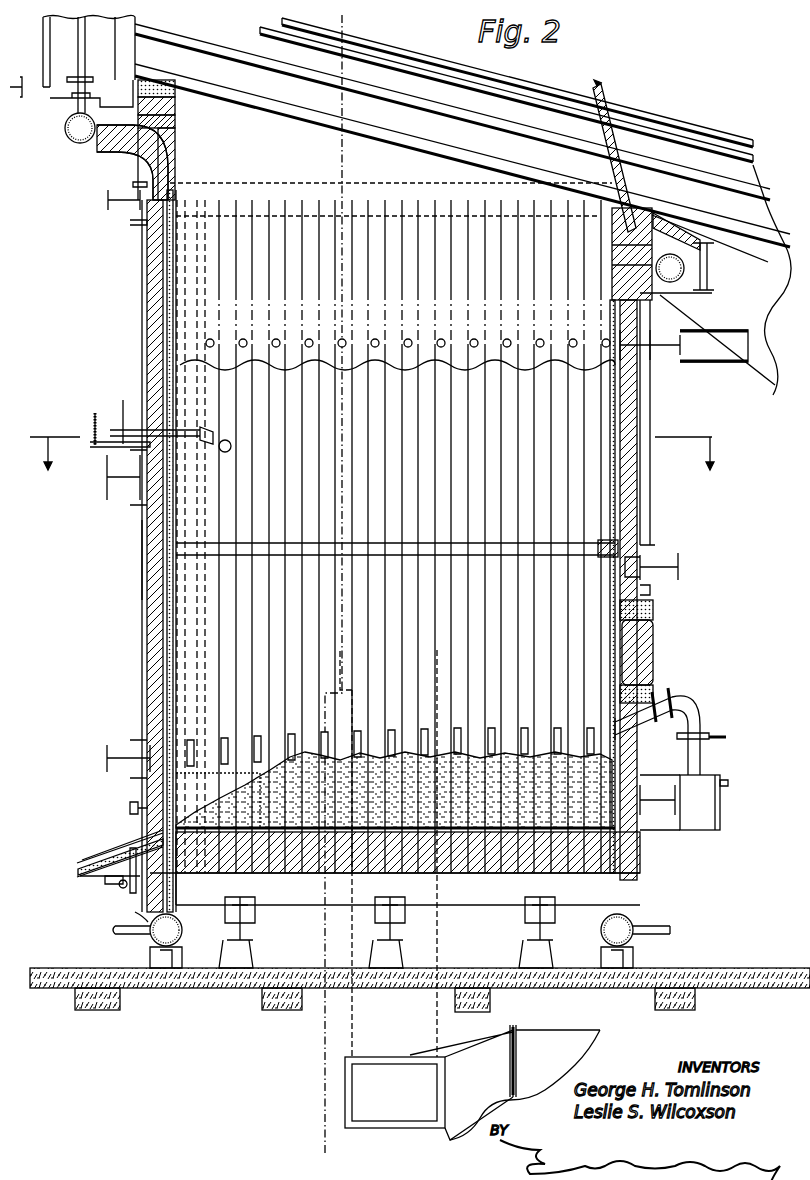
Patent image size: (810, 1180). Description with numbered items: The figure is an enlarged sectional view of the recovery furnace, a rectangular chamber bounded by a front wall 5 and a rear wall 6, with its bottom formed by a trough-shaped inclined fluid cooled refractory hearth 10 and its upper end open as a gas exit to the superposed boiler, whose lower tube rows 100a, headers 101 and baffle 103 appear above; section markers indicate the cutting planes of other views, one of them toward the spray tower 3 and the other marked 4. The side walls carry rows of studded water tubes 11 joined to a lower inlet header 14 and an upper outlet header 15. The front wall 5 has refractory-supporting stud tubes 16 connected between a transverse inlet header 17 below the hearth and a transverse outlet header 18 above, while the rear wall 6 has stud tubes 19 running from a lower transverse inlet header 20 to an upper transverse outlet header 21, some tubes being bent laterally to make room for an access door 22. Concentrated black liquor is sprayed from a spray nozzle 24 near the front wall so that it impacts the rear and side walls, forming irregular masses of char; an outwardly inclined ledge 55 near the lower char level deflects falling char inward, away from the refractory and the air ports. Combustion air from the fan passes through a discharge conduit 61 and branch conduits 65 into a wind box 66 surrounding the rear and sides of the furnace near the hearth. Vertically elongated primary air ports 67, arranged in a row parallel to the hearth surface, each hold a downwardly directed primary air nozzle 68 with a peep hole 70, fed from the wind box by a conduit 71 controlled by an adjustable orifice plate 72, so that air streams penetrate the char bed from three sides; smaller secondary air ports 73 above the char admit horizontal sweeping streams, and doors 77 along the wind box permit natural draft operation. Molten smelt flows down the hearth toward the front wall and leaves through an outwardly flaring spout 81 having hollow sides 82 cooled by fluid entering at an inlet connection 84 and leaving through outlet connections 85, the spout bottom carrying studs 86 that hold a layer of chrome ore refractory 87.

The spray tower 3 is at (350, 1155).
The section line 4- 4 is at (372, 468).
The front wall 5 is at (145, 548).
The rear wall 6 is at (652, 603).
The hearth 10 is at (479, 820).
The water tubes 11 is at (215, 272).
The inlet header 14 is at (280, 905).
The outlet header 15 is at (267, 183).
The stud tubes 16 is at (160, 340).
The transverse inlet header 17 is at (182, 930).
The transverse outlet header 18 is at (67, 143).
The stud tubes 19 is at (617, 497).
The lower transverse inlet header 20 is at (602, 930).
The upper transverse outlet header 21 is at (673, 285).
The access door 22 is at (656, 650).
The spray nozzle 24 is at (220, 440).
The ledge 55 is at (534, 542).
The discharge conduit 61 is at (536, 1038).
The branch conduits 65 is at (434, 1039).
The wind box 66 is at (720, 805).
The primary air ports 67 is at (391, 730).
The primary air nozzle 68 is at (658, 709).
The peep hole 70 is at (702, 704).
The conduit 71 is at (702, 728).
The adjustable orifice plate 72 is at (726, 737).
The secondary air ports 73 is at (311, 341).
The doors 77 is at (728, 795).
The spout 81 is at (80, 876).
The hollow sides 82 is at (130, 888).
The inlet connection 84 is at (114, 884).
The outlet connections 85 is at (148, 827).
The studs 86 is at (86, 862).
The chrome ore refractory 87 is at (106, 855).
The lower tube rows 100a is at (250, 113).
The headers 101 is at (138, 46).
The baffle 103 is at (607, 100).